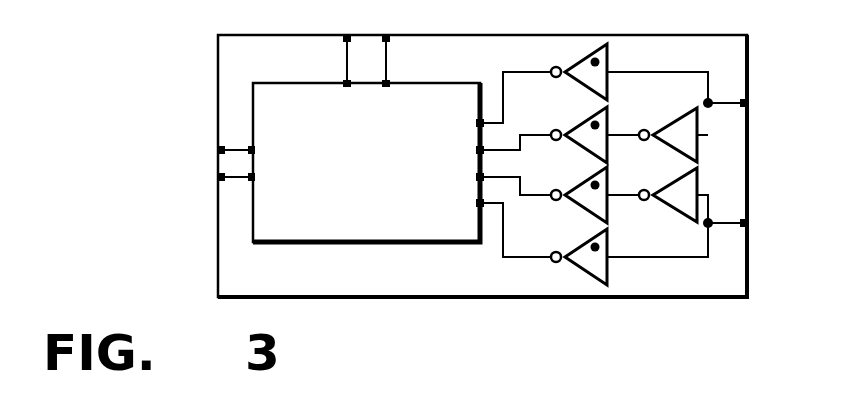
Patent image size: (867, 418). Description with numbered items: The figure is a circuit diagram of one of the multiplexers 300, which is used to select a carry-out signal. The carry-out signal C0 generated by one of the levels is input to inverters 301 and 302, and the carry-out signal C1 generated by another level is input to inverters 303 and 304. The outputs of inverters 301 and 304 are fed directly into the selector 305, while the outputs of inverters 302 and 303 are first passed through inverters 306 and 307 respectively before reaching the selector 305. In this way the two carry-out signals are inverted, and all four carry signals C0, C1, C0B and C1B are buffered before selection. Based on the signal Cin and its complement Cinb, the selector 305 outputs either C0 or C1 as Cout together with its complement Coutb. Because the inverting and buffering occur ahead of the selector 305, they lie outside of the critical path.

The multiplexer 300 is at (459, 150).
The selector 305 is at (368, 162).
The inverter 301 is at (578, 97).
The inverter 302 is at (666, 152).
The inverter 303 is at (666, 214).
The inverter 304 is at (578, 274).
The inverter 306 is at (578, 152).
The inverter 307 is at (578, 214).